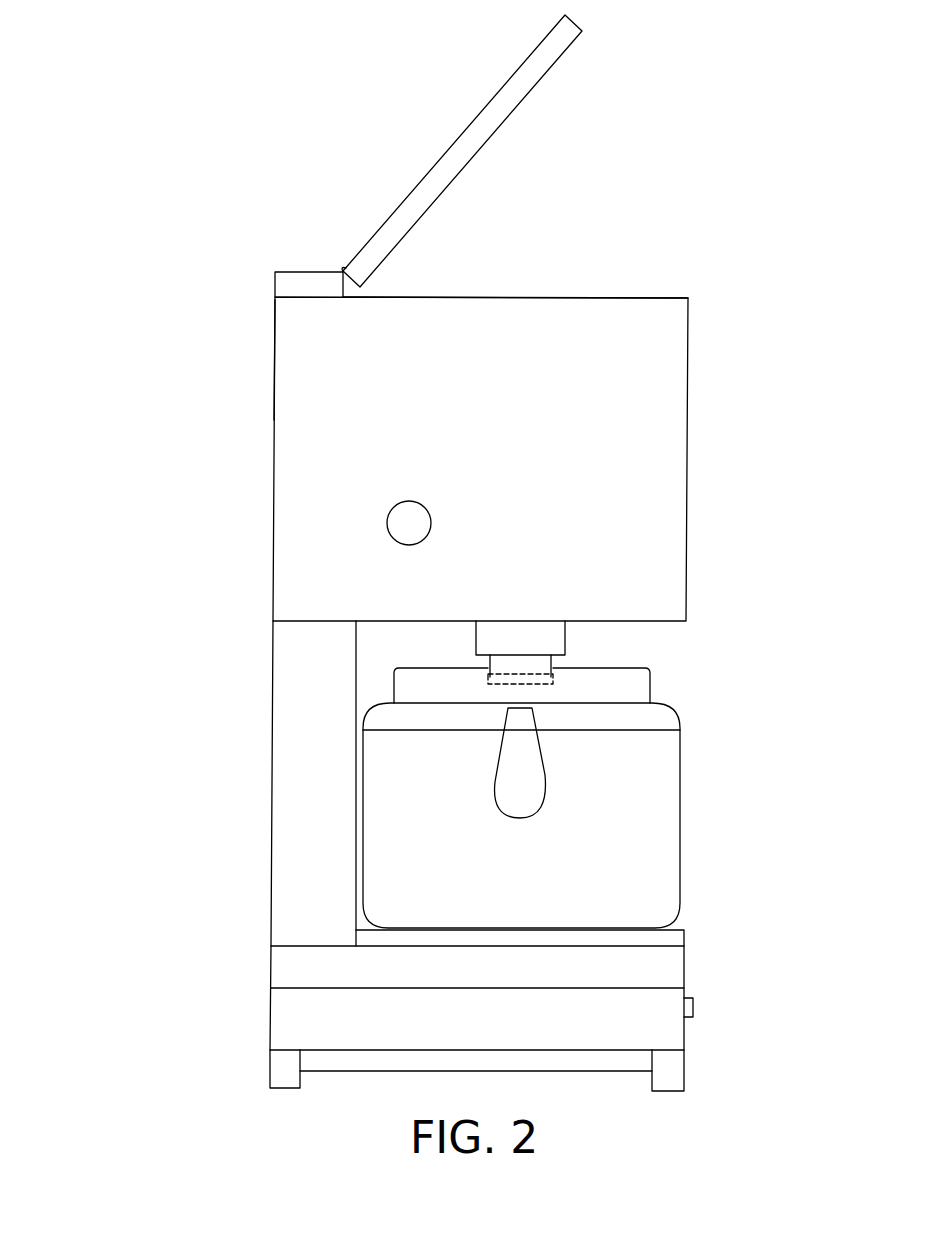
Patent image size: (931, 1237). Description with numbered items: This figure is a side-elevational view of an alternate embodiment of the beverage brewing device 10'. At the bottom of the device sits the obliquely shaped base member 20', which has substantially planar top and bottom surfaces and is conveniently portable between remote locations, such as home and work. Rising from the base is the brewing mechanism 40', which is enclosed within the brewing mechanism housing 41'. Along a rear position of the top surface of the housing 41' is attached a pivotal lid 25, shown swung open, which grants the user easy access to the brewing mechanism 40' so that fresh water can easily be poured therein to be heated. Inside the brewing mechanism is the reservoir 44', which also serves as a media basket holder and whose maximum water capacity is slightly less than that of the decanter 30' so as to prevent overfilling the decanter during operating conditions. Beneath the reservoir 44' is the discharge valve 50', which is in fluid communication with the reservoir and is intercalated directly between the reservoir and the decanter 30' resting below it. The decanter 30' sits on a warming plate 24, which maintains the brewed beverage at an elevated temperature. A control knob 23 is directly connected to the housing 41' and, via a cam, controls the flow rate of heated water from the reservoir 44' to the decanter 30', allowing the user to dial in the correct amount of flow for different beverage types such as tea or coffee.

The device 10' is at (425, 553).
The base member 20' is at (440, 1018).
The control knob 23 is at (387, 522).
The warming plate 24 is at (668, 940).
The pivotal lid 25 is at (532, 50).
The decanter 30' is at (567, 798).
The brewing mechanism 40' is at (436, 609).
The brewing mechanism housing 41' is at (223, 360).
The reservoir 44' is at (515, 254).
The discharge valve 50' is at (604, 652).